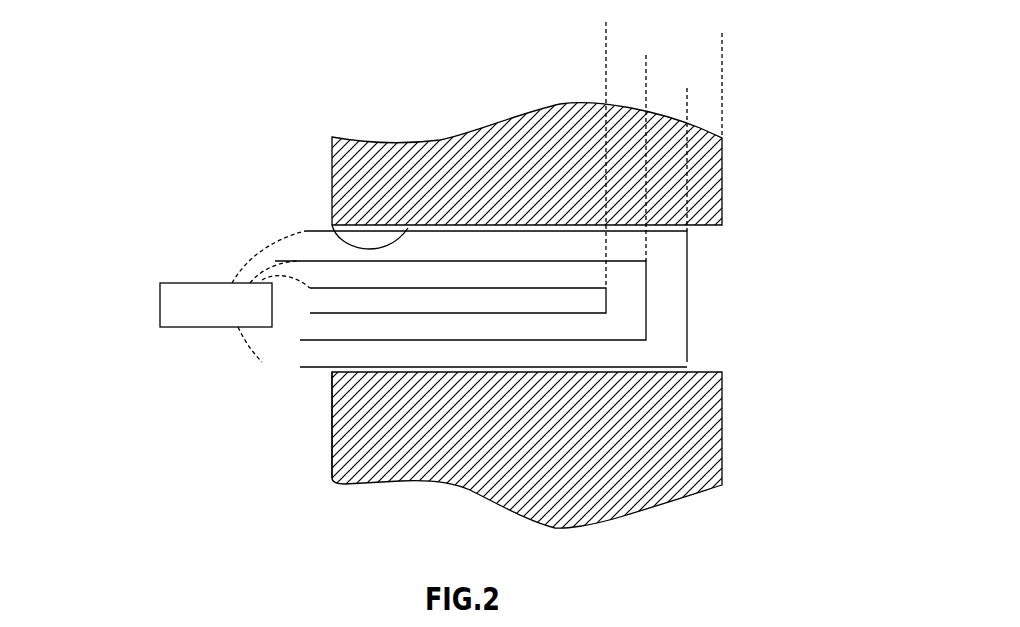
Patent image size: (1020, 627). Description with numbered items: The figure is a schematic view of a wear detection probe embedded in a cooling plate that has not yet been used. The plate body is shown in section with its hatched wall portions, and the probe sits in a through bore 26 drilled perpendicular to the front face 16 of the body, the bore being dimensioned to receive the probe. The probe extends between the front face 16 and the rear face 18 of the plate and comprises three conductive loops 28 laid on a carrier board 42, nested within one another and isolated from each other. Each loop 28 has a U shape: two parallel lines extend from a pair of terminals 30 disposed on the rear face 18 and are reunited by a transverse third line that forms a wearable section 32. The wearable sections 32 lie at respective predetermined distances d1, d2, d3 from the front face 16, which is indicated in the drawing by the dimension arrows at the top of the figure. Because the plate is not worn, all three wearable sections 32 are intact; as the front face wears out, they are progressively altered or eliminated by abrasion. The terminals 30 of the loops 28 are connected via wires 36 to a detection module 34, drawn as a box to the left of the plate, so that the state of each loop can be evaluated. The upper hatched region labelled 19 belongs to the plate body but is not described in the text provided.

The front face 16 is at (723, 432).
The rear face 18 is at (332, 460).
The upper housing part 19 is at (498, 167).
The through bore 26 is at (332, 231).
The conductive loop 28 is at (385, 315).
The terminals 30 is at (318, 258).
The wearable section 32 is at (607, 303).
The detection module 34 is at (160, 305).
The wires 36 is at (300, 367).
The carrier board 42 is at (700, 290).
The predetermined distance d1 is at (687, 98).
The predetermined distance d2 is at (646, 70).
The predetermined distance d3 is at (607, 33).